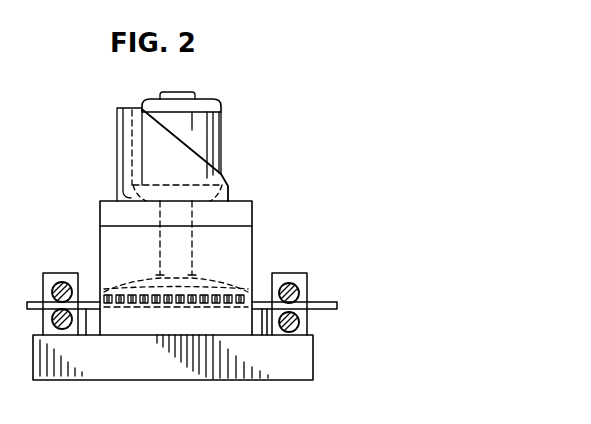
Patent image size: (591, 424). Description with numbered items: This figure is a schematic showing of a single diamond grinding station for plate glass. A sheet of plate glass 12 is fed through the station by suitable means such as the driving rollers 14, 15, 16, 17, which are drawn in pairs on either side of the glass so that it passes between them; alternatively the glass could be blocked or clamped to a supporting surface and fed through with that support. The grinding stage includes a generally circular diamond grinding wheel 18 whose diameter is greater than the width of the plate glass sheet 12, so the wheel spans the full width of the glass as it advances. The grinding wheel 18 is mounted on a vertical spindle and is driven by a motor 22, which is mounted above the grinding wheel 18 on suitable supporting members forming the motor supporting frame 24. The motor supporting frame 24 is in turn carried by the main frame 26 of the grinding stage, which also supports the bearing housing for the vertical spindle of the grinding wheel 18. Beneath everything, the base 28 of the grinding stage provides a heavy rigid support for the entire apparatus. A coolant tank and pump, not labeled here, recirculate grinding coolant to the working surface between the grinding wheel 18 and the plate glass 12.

The sheet of plate glass 12 is at (316, 302).
The driving roller 14 is at (286, 284).
The driving roller 15 is at (300, 322).
The driving roller 16 is at (60, 283).
The driving roller 17 is at (48, 322).
The diamond grinding wheel 18 is at (208, 292).
The motor 22 is at (212, 140).
The motor supporting frame 24 is at (117, 157).
The main frame 26 is at (244, 212).
The base 28 is at (208, 380).